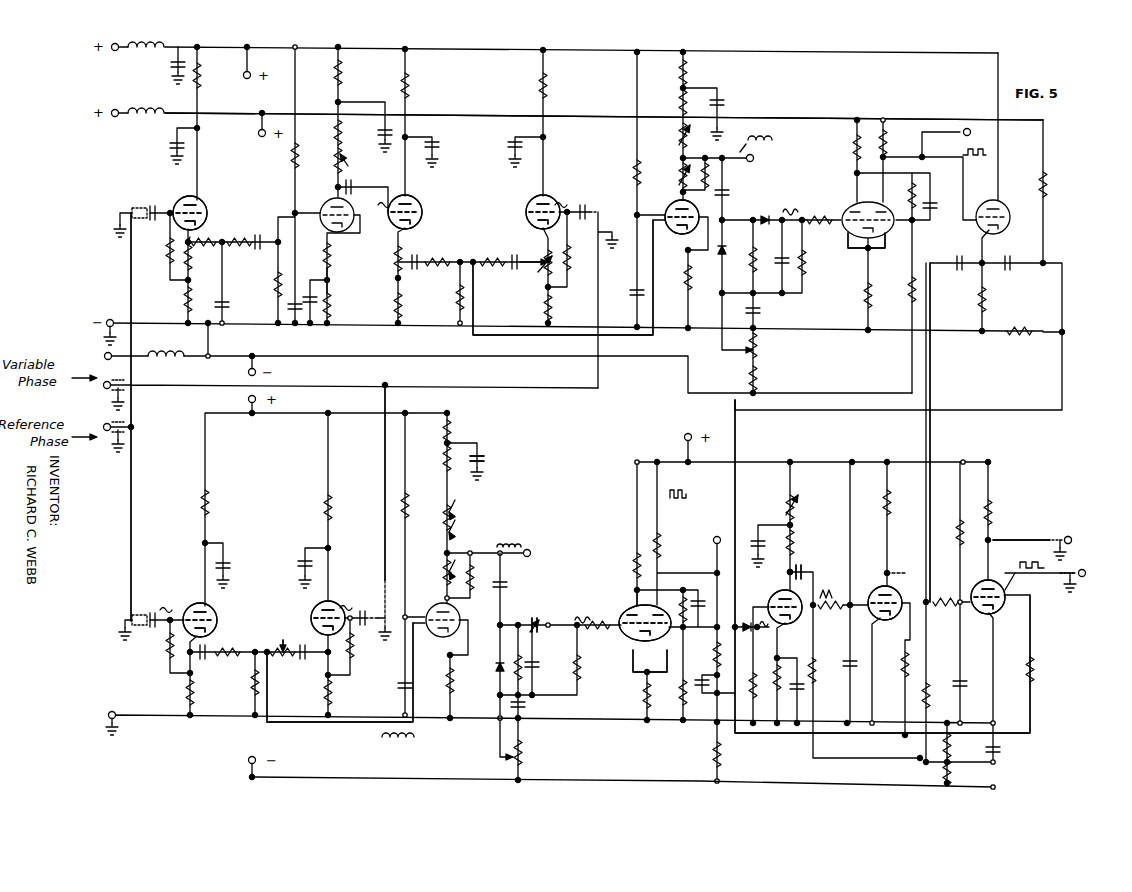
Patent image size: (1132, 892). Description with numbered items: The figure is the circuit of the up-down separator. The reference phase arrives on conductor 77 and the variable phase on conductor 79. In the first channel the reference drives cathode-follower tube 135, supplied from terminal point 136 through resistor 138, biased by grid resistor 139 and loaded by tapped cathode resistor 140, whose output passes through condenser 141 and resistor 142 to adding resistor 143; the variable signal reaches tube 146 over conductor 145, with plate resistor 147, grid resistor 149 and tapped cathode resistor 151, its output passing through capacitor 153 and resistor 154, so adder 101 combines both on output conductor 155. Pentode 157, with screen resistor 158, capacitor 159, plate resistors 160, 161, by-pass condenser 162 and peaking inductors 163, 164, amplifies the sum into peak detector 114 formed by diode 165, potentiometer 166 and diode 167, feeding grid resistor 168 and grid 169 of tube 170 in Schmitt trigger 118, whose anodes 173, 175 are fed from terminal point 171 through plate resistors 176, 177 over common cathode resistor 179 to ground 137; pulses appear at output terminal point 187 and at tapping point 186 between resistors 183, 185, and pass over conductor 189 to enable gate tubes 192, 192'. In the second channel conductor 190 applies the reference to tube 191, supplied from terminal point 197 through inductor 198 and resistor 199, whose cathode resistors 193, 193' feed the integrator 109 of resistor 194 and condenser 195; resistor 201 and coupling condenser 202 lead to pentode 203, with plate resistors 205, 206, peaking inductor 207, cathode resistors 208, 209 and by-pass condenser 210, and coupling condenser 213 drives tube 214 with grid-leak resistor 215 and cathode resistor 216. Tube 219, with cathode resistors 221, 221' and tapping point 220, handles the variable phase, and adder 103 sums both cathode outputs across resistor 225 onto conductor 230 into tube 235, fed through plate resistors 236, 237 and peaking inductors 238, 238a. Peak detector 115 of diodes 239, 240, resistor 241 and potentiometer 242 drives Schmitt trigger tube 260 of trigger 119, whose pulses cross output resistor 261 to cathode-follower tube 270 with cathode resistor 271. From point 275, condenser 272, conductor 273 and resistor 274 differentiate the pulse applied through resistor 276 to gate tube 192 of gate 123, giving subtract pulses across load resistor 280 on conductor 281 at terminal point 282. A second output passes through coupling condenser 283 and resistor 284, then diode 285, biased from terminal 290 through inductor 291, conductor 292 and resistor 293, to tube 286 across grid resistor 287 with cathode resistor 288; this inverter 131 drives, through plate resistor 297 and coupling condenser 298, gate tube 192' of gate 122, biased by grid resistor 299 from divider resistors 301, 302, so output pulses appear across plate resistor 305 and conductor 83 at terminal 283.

The terminal point 197 is at (114, 52).
The inductor 198 is at (167, 43).
The resistor 199 is at (202, 82).
The input terminal 290 is at (114, 119).
The inductor 291 is at (150, 98).
The tube 191 is at (178, 206).
The integrator 109 is at (228, 191).
The resistor 194 is at (210, 232).
The resistor 201 is at (243, 238).
The coupling condenser 202 is at (257, 246).
The conductor 190 is at (132, 262).
The cathode resistor 193 is at (194, 261).
The cathode resistor 193' is at (167, 299).
The condenser 195 is at (222, 300).
The plate resistor 205 is at (336, 88).
The plate resistor 206 is at (321, 132).
The peaking inductor 207 is at (345, 164).
The coupling condenser 213 is at (351, 184).
The tube 203 is at (322, 200).
The tube 214 is at (398, 200).
The grid-leak resistor 215 is at (331, 258).
The cathode resistor 208 is at (329, 263).
The cathode resistor 209 is at (331, 305).
The cathode resistor 216 is at (392, 306).
The condenser 210 is at (306, 308).
The resistor 225 is at (447, 295).
The tapping point 220 is at (547, 263).
The cathode resistor 221' is at (529, 256).
The cathode resistor 221 is at (567, 308).
The conductor 230 is at (517, 318).
The adder 103 is at (475, 193).
The tube 219 is at (558, 202).
The plate resistor 236 is at (690, 74).
The plate resistor 237 is at (675, 106).
The peaking inductor 238 is at (680, 144).
The peaking inductor 238a is at (680, 168).
The tube 235 is at (676, 200).
The diode 239 is at (720, 262).
The conductor 292 is at (800, 114).
The diode 240 is at (768, 216).
The Schmitt trigger 119 is at (845, 193).
The Schmitt trigger tube 260 is at (852, 246).
The output resistor 261 is at (890, 143).
The resistor 241 is at (758, 268).
The potentiometer 242 is at (760, 352).
The peak detector 115 is at (705, 355).
The tube 270 is at (1002, 197).
The resistor 293 is at (1046, 186).
The coupling condenser 283 is at (1010, 257).
The condenser 272 is at (960, 270).
The point 275 is at (990, 270).
The cathode resistor 271 is at (985, 300).
The resistor 284 is at (1025, 338).
The conductor 273 is at (930, 447).
The conductor 79 is at (104, 383).
The conductor 77 is at (104, 426).
The terminal point 136 is at (245, 398).
The resistor 138 is at (200, 503).
The tube 135 is at (184, 605).
The adder circuit 101 is at (265, 595).
The grid resistor 139 is at (167, 641).
The cathode resistor 140 is at (197, 662).
The condenser 141 is at (216, 645).
The resistor 142 is at (233, 647).
The resistor 154 is at (283, 640).
The adding resistor 143 is at (247, 687).
The capacitor 153 is at (310, 668).
The output conductor 155 is at (338, 728).
The plate resistor 147 is at (318, 514).
The conductor 145 is at (382, 514).
The tube 146 is at (335, 605).
The grid resistor 149 is at (352, 650).
The cathode resistor 151 is at (311, 694).
The resistor 158 is at (405, 507).
The capacitor 159 is at (400, 690).
The plate resistor 160 is at (458, 432).
The plate resistor 161 is at (442, 462).
The condenser 162 is at (485, 455).
The inductor 163 is at (455, 524).
The inductor 164 is at (445, 568).
The amplifier tube 157 is at (430, 602).
The diode 165 is at (497, 680).
The potentiometer 166 is at (502, 758).
The diode element 167 is at (538, 622).
The peak detector 114 is at (570, 703).
The grid resistor 168 is at (593, 640).
The terminal point 171 is at (680, 437).
The plate resistor 176 is at (636, 565).
The plate resistor 177 is at (660, 548).
The anode 173 is at (632, 600).
The grid 169 is at (628, 610).
The Schmitt trigger 118 is at (700, 573).
The tube 170 is at (630, 648).
The cathode resistor 179 is at (640, 683).
The anode 175 is at (672, 630).
The output terminal point 187 is at (716, 535).
The resistor 183 is at (725, 669).
The grid resistor 287 is at (721, 687).
The tapping point 186 is at (700, 705).
The resistor 185 is at (712, 753).
The plate resistor 297 is at (798, 535).
The tube 286 is at (784, 578).
The coupling condenser 298 is at (806, 572).
The diode 285 is at (745, 613).
The signal inverter 131 is at (830, 560).
The cathode resistor 288 is at (785, 663).
The grid resistor 299 is at (818, 675).
The conductor 189 is at (783, 733).
The plate resistor 305 is at (893, 520).
The and gate 122 is at (910, 561).
The gate tube 192' is at (886, 615).
The conductor 83 is at (940, 575).
The resistor 276 is at (947, 612).
The resistor 274 is at (929, 690).
The resistor 301 is at (951, 742).
The resistor 302 is at (942, 772).
The load resistor 280 is at (997, 523).
The and gate 123 is at (1032, 533).
The gate tube 192 is at (1002, 631).
The conductor 281 is at (1040, 538).
The terminal point 282 is at (1075, 540).
The ground 137 is at (118, 735).